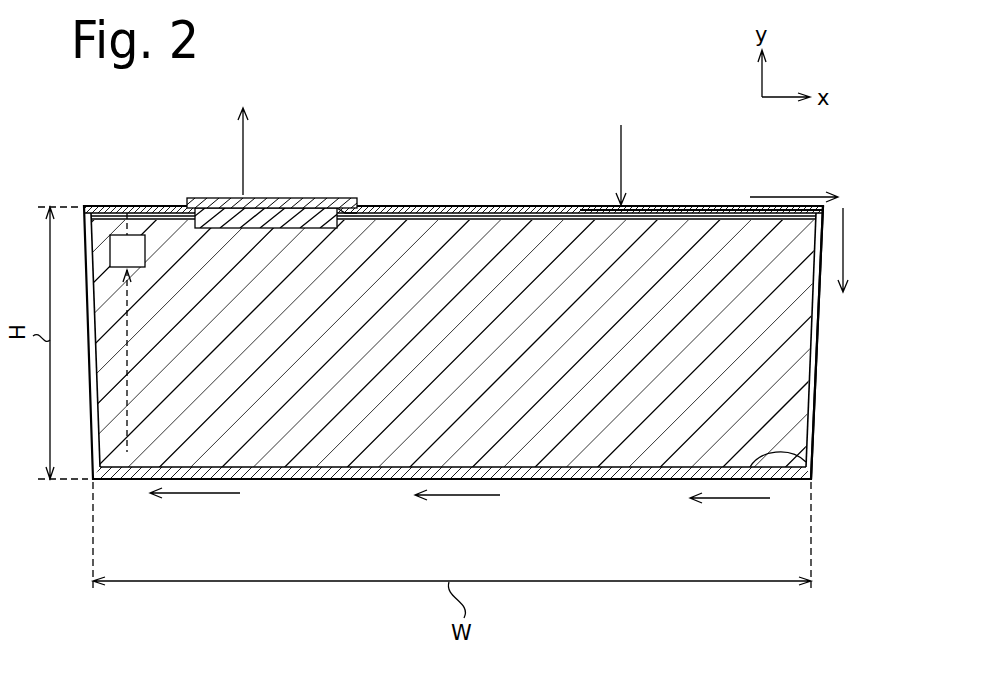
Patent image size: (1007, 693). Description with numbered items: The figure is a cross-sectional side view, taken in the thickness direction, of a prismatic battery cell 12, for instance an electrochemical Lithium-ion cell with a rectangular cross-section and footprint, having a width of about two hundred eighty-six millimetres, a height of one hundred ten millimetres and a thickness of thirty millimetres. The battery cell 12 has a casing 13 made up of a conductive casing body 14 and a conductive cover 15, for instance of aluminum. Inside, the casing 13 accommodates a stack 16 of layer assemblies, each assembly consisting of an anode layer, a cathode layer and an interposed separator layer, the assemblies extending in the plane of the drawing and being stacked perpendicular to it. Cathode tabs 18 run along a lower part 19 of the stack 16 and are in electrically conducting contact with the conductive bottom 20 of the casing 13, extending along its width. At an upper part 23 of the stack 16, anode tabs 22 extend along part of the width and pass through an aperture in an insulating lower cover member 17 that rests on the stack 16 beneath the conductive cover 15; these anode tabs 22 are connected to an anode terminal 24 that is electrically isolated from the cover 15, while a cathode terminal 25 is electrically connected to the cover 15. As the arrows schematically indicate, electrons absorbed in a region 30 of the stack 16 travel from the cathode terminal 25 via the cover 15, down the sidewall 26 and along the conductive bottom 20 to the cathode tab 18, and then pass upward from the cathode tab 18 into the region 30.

The battery cell 12 is at (503, 346).
The casing 13 is at (553, 208).
The conductive casing body 14 is at (92, 415).
The conductive cover 15 is at (787, 206).
The stack of layer assemblies 16 is at (492, 208).
The insulating lower cover member 17 is at (707, 208).
The cathode tabs 18 is at (565, 479).
The lower part of the stack 19 is at (811, 478).
The conductive bottom 20 is at (303, 479).
The anode tabs 22 is at (272, 208).
The upper part of the stack 23 is at (390, 228).
The anode terminal 24 is at (213, 198).
The cathode terminal 25 is at (652, 208).
The sidewall 26 is at (820, 314).
The region of the stack 30 is at (118, 206).